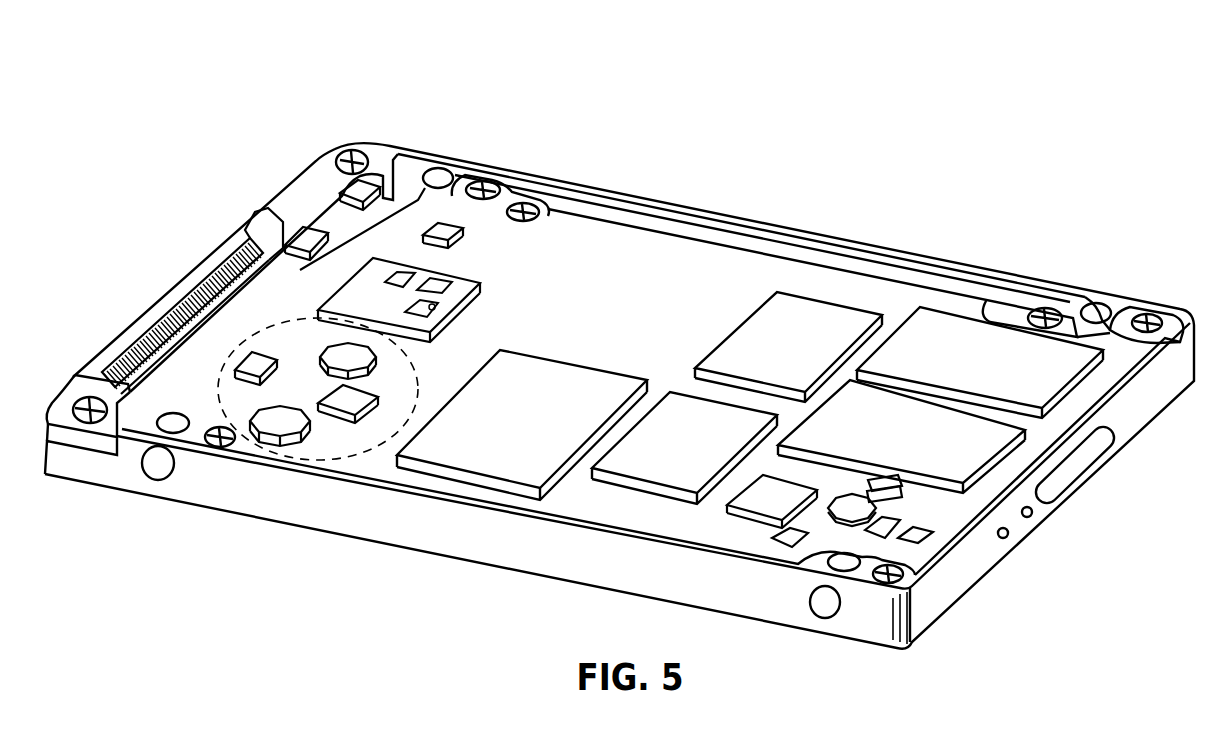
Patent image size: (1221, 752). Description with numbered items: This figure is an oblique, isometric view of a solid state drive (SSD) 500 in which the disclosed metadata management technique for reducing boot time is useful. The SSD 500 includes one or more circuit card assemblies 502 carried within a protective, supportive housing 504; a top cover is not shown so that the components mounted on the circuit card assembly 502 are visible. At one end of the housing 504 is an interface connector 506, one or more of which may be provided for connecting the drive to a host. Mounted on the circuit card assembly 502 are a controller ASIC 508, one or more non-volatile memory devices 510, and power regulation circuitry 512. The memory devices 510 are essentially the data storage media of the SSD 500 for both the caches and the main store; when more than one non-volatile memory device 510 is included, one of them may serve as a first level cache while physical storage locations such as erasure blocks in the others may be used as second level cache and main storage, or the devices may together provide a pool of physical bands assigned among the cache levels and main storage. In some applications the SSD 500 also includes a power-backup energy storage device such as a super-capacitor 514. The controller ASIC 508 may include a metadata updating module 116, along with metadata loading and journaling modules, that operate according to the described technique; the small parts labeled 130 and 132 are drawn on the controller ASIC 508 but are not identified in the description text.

The solid state drive 500 is at (840, 173).
The circuit card assembly 502 is at (713, 253).
The housing 504 is at (363, 533).
The interface connector 506 is at (212, 267).
The controller ASIC 508 is at (383, 295).
The non-volatile memory device 510 is at (1002, 363).
The power regulation circuitry 512 is at (293, 462).
The super-capacitor 514 is at (530, 427).
The sensor 130 is at (397, 277).
The sensor 132 is at (442, 288).
The metadata updating module 116 is at (434, 307).